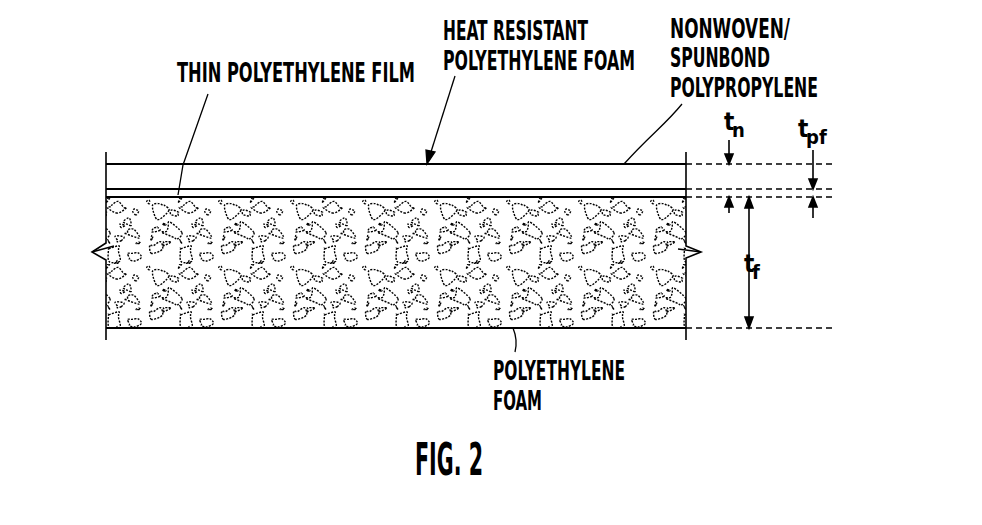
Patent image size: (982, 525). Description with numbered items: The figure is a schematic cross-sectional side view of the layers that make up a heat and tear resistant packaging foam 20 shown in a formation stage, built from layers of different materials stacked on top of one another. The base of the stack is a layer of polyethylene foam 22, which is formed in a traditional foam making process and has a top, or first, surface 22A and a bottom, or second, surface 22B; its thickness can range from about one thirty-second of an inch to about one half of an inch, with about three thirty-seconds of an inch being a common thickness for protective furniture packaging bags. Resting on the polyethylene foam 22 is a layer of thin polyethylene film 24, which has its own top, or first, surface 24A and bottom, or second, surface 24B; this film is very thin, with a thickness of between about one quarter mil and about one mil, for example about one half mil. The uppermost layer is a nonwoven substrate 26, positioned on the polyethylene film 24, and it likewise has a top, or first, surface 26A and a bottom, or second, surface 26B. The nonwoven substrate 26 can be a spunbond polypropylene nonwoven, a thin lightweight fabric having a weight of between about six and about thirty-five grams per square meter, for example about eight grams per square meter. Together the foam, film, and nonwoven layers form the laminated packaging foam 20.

The heat and tear resistant packaging foam 20 is at (155, 88).
The polyethylene foam 22 is at (250, 328).
The first surface of polyethylene foam 22A is at (207, 208).
The second surface of polyethylene foam 22B is at (362, 328).
The thin polyethylene film 24 is at (286, 195).
The first surface of polyethylene film 24A is at (136, 188).
The second surface of polyethylene film 24B is at (115, 193).
The nonwoven substrate 26 is at (490, 165).
The first surface of nonwoven substrate 26A is at (343, 165).
The second surface of nonwoven substrate 26B is at (233, 190).